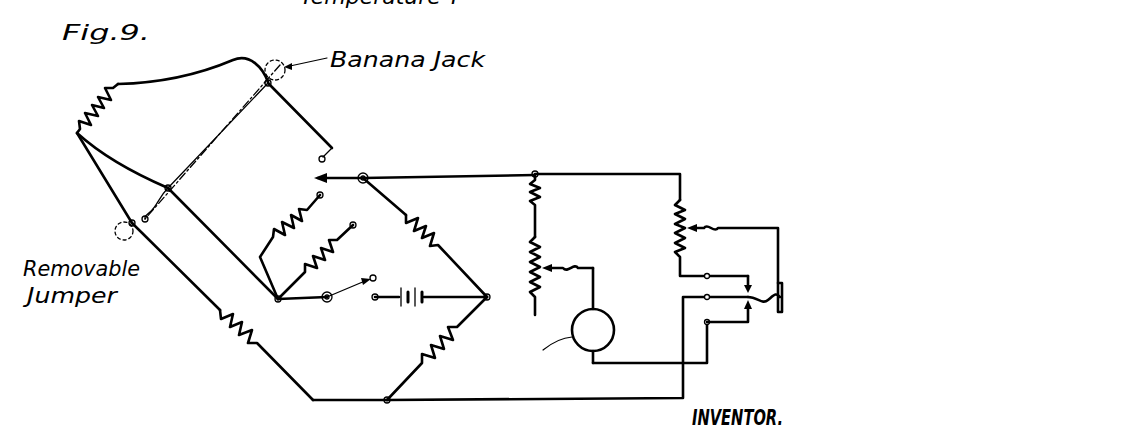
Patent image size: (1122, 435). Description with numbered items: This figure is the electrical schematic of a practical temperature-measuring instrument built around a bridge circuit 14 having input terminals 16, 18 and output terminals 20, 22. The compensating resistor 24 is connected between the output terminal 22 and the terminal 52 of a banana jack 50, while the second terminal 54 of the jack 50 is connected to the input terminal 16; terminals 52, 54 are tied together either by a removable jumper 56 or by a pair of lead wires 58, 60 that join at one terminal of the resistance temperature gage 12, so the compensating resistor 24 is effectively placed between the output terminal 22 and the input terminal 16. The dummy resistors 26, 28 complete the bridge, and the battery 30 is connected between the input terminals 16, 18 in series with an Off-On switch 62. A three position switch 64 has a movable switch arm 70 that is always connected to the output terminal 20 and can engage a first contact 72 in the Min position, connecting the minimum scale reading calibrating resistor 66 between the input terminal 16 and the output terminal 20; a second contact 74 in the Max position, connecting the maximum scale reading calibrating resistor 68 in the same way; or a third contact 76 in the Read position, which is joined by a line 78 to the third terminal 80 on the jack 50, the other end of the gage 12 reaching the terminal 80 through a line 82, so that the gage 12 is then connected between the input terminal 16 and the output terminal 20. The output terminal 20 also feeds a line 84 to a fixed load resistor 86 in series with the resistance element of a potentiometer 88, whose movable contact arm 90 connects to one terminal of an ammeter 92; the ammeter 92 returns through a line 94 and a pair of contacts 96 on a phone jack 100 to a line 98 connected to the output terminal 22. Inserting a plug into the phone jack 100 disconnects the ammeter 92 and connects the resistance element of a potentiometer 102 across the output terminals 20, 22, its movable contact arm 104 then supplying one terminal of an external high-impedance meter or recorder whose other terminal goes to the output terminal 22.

The resistance temperature gage 12 is at (110, 87).
The line 82 is at (180, 72).
The banana jack 50 is at (221, 130).
The third terminal 80 is at (272, 81).
The line 78 is at (316, 130).
The third contact 76 is at (320, 156).
The three position switch 64 is at (358, 170).
The output terminal 20 is at (368, 174).
The movable switch arm 70 is at (366, 174).
The line 84 is at (475, 176).
The lead wire 58 is at (99, 173).
The lead wire 60 is at (105, 153).
The second terminal 54 is at (167, 185).
The terminal 52 is at (128, 224).
The removable jumper 56 is at (148, 222).
The bridge circuit 14 is at (244, 274).
The compensating resistor 24 is at (228, 338).
The input terminal 16 is at (279, 302).
The maximum scale reading calibrating resistor 68 is at (272, 236).
The second contact 74 is at (317, 195).
The minimum scale reading calibrating resistor 66 is at (305, 258).
The first contact 72 is at (356, 221).
The Off-On switch 62 is at (341, 300).
The battery 30 is at (419, 302).
The dummy resistor 28 is at (437, 238).
The input terminal 18 is at (489, 301).
The dummy resistor 26 is at (433, 367).
The output terminal 22 is at (386, 403).
The line 98 is at (478, 398).
The fixed load resistor 86 is at (530, 193).
The potentiometer 88 is at (530, 256).
The movable contact arm 90 is at (548, 271).
The ammeter 92 is at (601, 314).
The line 94 is at (656, 363).
The potentiometer 102 is at (672, 233).
The movable contact arm 104 is at (707, 233).
The pair of contacts 96 is at (750, 312).
The phone jack 100 is at (785, 291).